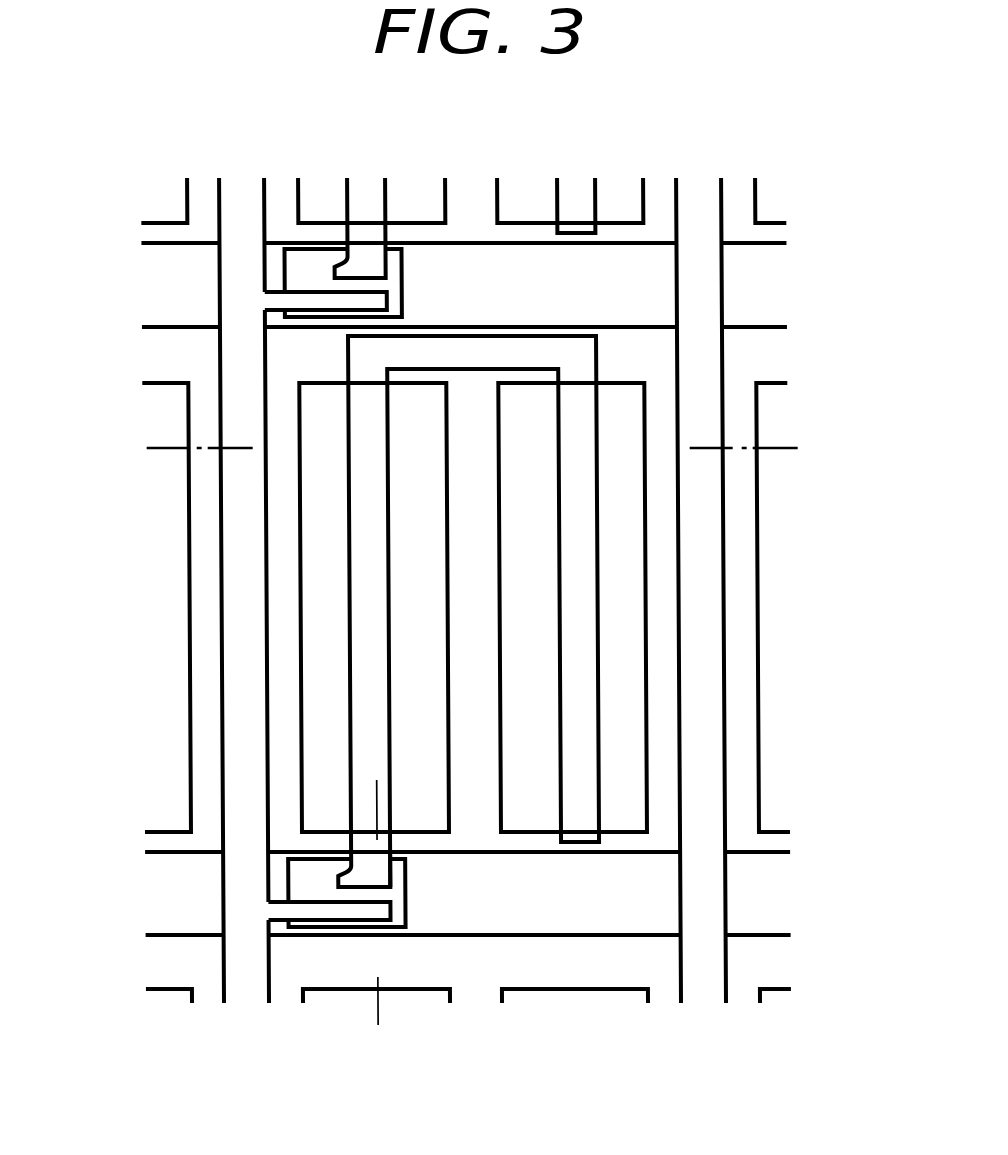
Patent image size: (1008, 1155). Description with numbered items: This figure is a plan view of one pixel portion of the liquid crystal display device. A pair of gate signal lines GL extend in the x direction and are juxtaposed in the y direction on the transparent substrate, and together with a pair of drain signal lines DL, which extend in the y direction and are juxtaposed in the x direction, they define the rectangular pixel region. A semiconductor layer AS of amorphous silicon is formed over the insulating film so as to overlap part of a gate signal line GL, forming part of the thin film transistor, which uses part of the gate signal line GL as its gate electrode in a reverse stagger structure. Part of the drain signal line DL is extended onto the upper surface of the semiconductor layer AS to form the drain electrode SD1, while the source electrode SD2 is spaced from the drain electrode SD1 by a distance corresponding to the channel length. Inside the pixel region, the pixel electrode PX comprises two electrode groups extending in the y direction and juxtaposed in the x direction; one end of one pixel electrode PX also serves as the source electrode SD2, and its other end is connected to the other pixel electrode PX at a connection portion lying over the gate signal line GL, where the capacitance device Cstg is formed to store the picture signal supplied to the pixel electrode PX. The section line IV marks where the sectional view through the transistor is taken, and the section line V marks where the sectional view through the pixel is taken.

The gate signal line GL is at (758, 245).
The drain signal line DL is at (223, 980).
The pixel electrode PX is at (349, 608).
The capacitance device Cstg is at (542, 352).
The drain electrode SD1 is at (340, 913).
The source electrode SD2 is at (337, 883).
The semiconductor layer AS is at (407, 898).
The line V— V is at (789, 463).
The line IV— IV is at (393, 1024).